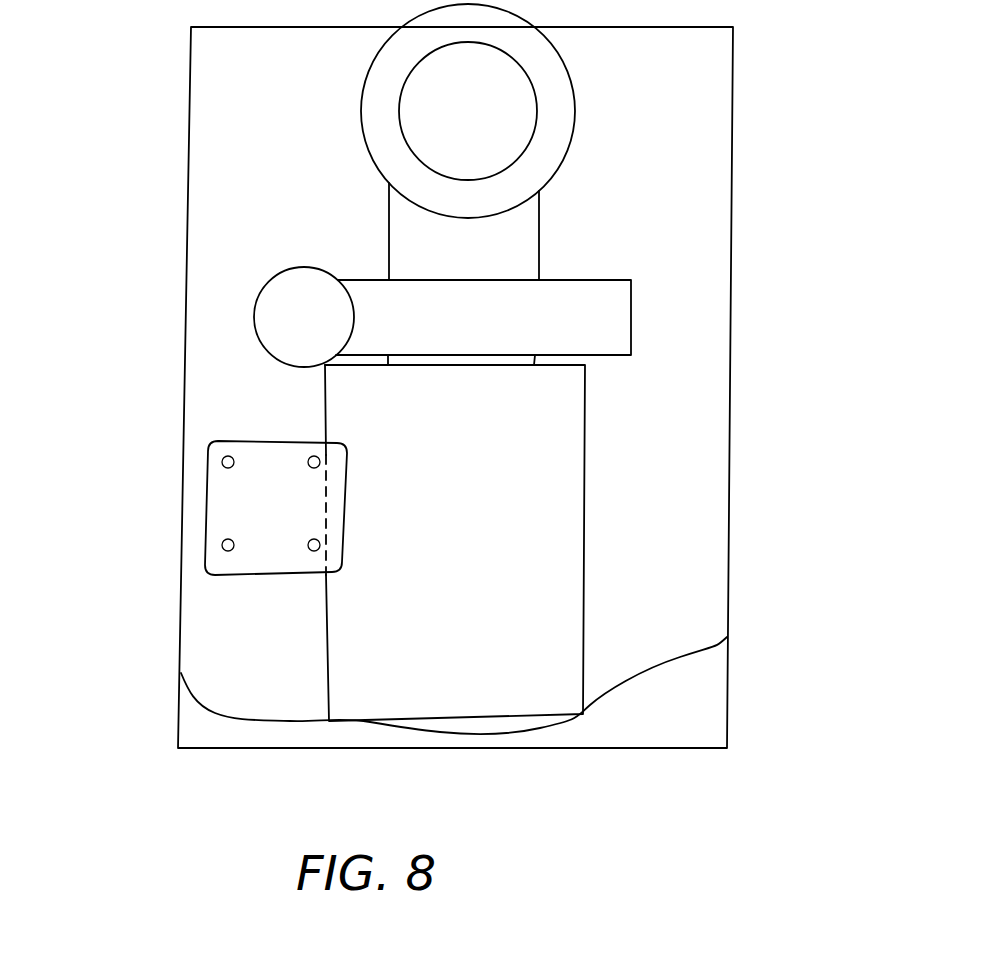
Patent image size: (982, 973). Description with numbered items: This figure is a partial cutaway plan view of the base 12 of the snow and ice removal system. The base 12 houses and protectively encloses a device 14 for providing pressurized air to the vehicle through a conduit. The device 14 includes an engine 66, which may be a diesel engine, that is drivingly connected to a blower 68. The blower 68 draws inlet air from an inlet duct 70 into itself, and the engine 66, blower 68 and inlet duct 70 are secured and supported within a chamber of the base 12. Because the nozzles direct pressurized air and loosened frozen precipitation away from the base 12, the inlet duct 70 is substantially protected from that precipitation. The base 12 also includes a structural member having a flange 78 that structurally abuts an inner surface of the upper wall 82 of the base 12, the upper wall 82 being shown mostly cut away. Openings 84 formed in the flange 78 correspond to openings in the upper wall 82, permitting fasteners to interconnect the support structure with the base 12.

The base 12 is at (672, 810).
The device 14 is at (751, 547).
The engine 66 is at (483, 502).
The blower 68 is at (631, 315).
The inlet duct 70 is at (541, 222).
The flange 78 is at (252, 441).
The upper wall 82 is at (200, 697).
The openings 84 is at (217, 460).